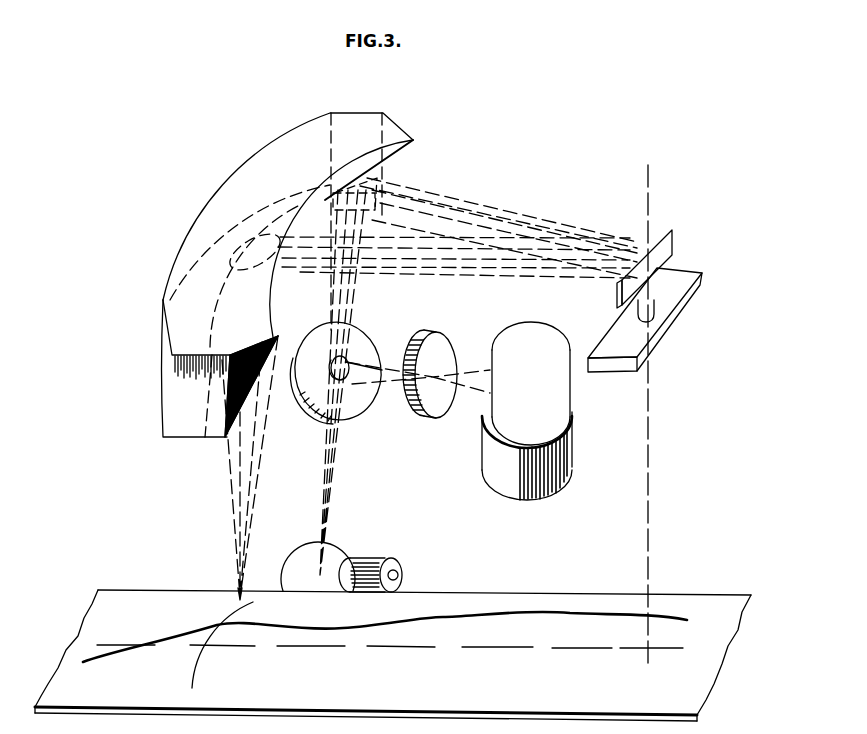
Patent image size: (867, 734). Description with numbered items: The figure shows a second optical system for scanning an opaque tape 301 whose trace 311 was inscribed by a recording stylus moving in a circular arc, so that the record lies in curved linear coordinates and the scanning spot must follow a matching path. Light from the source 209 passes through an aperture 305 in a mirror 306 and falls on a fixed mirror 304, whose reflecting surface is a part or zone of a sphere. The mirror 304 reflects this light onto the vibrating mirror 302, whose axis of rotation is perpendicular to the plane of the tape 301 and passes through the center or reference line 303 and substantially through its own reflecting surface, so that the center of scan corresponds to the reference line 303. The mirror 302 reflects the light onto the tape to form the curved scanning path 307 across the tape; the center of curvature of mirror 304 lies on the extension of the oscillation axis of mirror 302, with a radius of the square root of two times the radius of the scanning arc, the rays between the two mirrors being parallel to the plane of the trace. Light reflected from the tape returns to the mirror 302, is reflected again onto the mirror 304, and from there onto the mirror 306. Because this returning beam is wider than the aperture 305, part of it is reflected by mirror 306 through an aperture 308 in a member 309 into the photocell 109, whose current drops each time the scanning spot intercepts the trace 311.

The photocell 109 is at (555, 380).
The source 209 is at (333, 552).
The tape 301 is at (562, 594).
The vibrating mirror 302 is at (668, 250).
The center or reference line 303 is at (512, 652).
The fixed mirror 304 is at (193, 427).
The aperture 305 is at (340, 380).
The mirror 306 is at (357, 407).
The scanning path 307 is at (197, 667).
The aperture 308 is at (437, 370).
The member 309 is at (440, 408).
The trace 311 is at (483, 610).